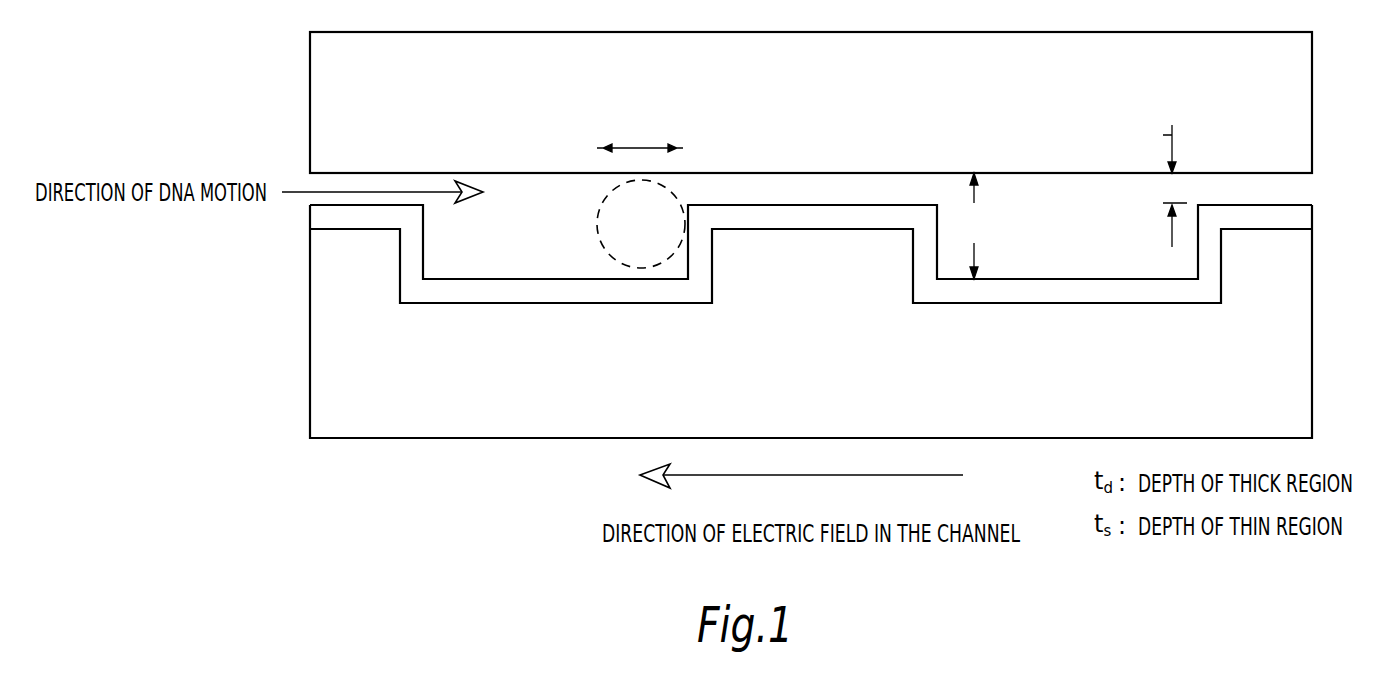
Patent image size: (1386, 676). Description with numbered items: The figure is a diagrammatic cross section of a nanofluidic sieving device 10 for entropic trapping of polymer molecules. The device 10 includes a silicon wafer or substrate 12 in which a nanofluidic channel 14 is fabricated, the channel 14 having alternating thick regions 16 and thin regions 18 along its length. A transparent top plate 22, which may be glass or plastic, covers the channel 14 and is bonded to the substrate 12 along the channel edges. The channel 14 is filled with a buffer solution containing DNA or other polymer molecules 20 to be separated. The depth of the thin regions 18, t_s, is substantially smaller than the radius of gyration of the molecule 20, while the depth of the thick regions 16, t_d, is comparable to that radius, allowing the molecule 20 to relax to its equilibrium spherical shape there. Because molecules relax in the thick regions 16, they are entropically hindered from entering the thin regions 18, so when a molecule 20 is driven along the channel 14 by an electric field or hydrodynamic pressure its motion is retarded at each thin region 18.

The nanofluidic sieving device 10 is at (1333, 44).
The substrate 12 is at (318, 360).
The nanofluidic channel 14 is at (1337, 174).
The thick region 16 is at (438, 249).
The thin region 18 is at (815, 187).
The polymer molecule 20 is at (605, 246).
The transparent top plate 22 is at (318, 87).